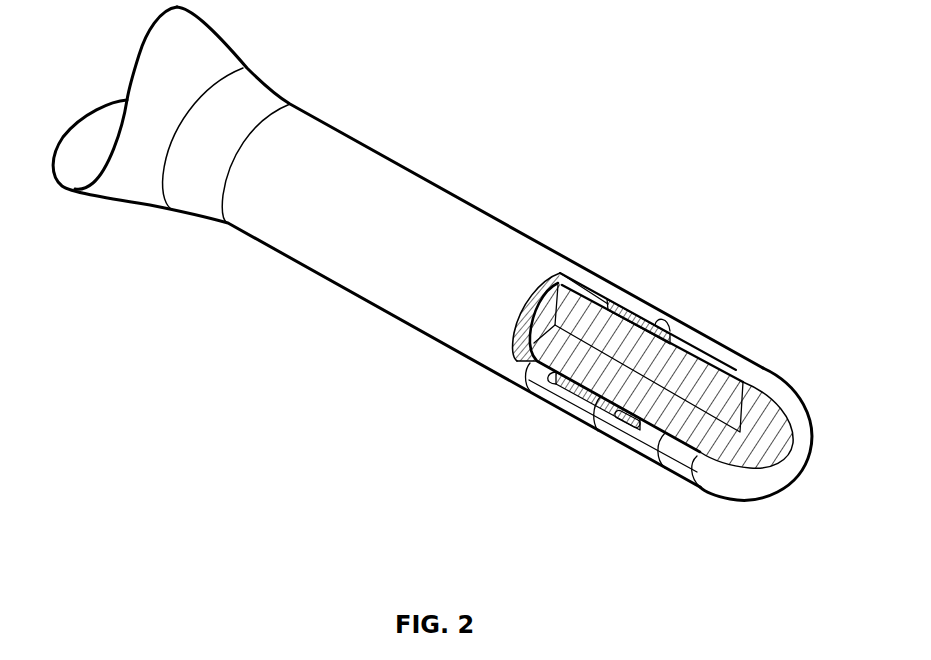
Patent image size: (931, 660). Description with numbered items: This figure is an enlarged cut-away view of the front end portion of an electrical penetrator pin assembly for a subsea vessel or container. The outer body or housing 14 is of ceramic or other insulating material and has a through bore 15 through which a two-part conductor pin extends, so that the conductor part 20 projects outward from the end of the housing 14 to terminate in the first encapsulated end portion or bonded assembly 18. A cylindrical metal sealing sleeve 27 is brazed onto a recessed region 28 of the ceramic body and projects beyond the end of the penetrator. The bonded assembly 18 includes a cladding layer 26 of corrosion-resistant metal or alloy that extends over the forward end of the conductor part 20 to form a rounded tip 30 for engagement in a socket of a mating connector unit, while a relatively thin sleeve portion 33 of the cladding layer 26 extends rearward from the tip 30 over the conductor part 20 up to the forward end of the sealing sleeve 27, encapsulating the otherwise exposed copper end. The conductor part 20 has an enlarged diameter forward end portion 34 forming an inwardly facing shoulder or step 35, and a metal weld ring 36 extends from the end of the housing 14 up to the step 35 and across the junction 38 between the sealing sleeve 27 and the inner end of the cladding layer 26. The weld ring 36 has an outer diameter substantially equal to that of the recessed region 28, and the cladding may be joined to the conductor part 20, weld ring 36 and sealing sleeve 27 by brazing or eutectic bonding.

The outer body or housing 14 is at (392, 178).
The through bore 15 is at (567, 283).
The first encapsulated end portion or bonded assembly 18 is at (656, 360).
The conductor part 20 is at (550, 347).
The cladding layer 26 is at (733, 361).
The sealing sleeve 27 is at (633, 293).
The recessed region 28 is at (532, 386).
The rounded tip 30 is at (798, 426).
The sleeve portion 33 is at (647, 443).
The enlarged diameter forward end portion 34 is at (680, 460).
The shoulder or step 35 is at (597, 427).
The weld ring 36 is at (688, 336).
The junction 38 is at (675, 316).